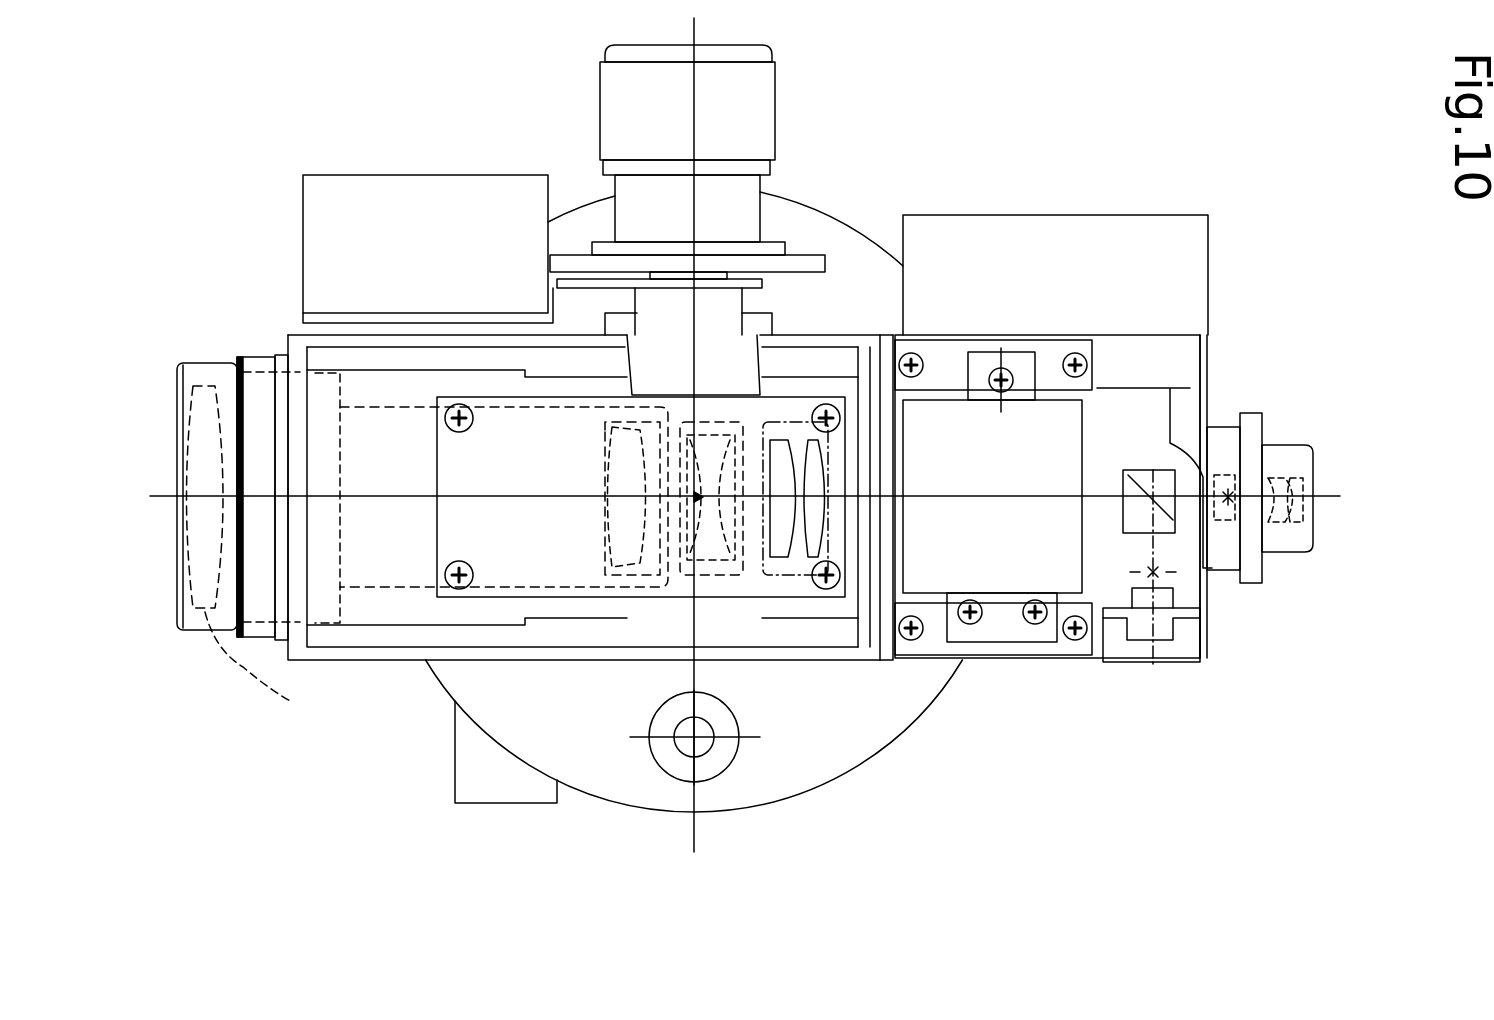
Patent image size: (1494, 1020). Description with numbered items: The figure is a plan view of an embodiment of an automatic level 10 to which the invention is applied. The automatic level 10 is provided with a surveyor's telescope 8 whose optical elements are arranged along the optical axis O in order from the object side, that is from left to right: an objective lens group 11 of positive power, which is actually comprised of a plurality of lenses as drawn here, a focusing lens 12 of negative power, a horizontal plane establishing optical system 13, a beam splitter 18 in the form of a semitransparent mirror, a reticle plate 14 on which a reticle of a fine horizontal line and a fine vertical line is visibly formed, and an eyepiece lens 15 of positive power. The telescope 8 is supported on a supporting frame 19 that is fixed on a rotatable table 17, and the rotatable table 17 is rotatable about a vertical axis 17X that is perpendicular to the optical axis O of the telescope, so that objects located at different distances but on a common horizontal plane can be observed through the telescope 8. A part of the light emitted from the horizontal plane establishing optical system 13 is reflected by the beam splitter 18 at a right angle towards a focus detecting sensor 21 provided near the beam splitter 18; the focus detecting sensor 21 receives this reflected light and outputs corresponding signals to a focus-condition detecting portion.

The surveyor's telescope 8 is at (383, 385).
The automatic level 10 is at (1016, 193).
The objective lens group 11 is at (603, 540).
The focusing lens 12 is at (798, 547).
The horizontal plane establishing optical system 13 is at (918, 430).
The reticle plate 14 is at (1228, 490).
The eyepiece lens 15 is at (1292, 535).
The rotatable table 17 is at (768, 803).
The vertical axis 17X is at (703, 497).
The beam splitter 18 is at (1157, 485).
The supporting frame 19 is at (617, 530).
The focus detecting sensor 21 is at (1138, 637).
The optical axis O is at (203, 498).